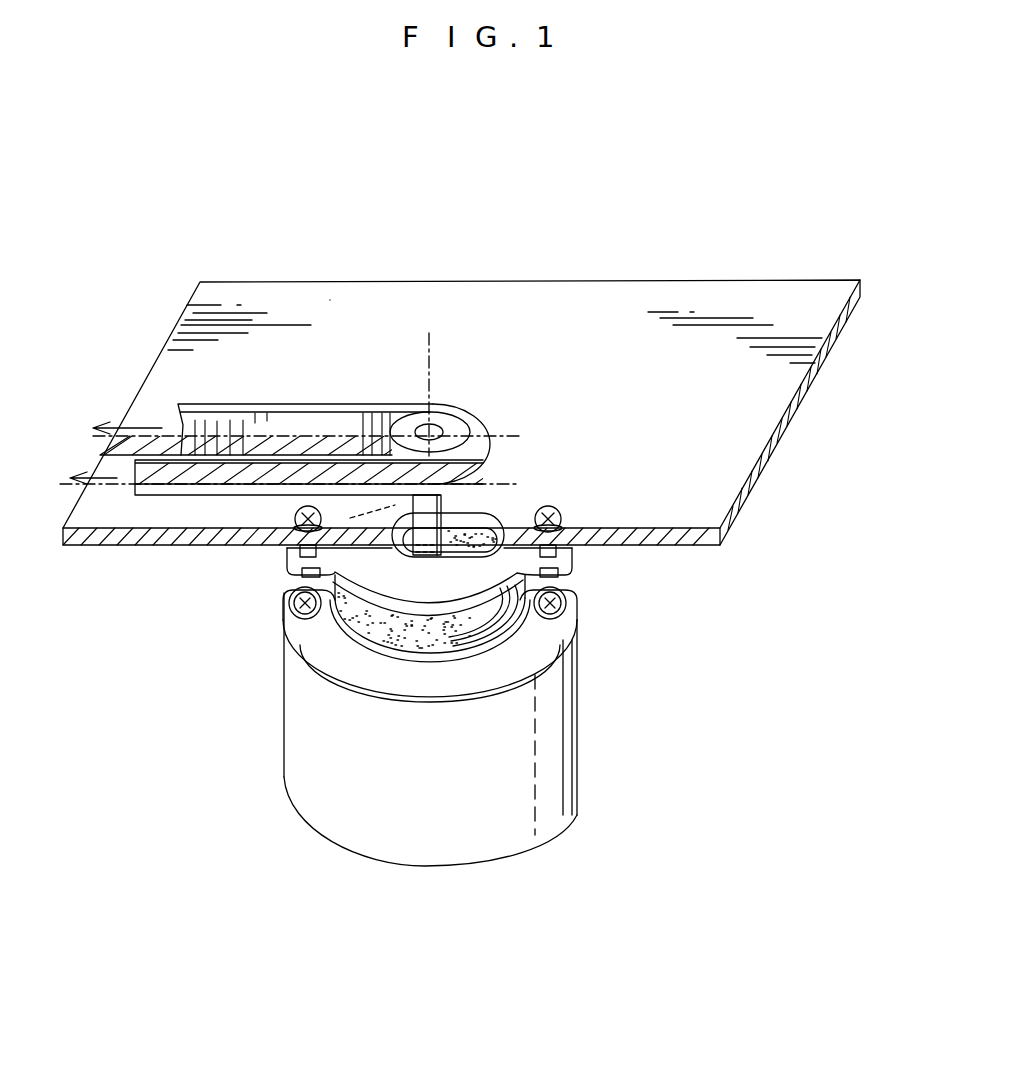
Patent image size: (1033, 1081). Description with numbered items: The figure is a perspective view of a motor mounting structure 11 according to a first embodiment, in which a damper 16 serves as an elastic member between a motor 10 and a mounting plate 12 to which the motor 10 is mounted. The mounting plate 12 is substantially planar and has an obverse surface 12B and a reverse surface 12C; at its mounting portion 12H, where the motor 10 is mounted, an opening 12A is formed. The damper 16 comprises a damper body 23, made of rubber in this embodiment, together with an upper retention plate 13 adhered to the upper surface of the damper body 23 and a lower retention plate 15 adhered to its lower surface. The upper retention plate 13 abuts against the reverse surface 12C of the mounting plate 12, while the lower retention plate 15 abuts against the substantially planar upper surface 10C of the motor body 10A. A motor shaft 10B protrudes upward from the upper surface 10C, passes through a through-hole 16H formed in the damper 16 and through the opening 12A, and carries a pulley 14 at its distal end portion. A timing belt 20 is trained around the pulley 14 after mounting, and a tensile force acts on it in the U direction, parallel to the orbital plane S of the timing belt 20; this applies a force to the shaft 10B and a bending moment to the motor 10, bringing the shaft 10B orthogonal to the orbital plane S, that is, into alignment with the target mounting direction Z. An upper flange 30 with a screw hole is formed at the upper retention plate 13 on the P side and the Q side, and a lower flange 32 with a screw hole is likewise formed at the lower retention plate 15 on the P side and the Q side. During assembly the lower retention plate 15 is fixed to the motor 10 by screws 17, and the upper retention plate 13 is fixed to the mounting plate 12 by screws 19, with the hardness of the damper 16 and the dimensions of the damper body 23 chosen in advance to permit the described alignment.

The motor 10 is at (473, 711).
The motor body 10A is at (508, 832).
The motor shaft 10B is at (290, 505).
The upper surface of motor body 10C is at (407, 680).
The motor mounting structure 11 is at (840, 137).
The mounting plate 12 is at (797, 413).
The opening 12A is at (472, 518).
The obverse surface 12B is at (700, 500).
The reverse surface 12C is at (693, 547).
The mounting portion 12H is at (508, 512).
The upper retention plate 13 is at (530, 513).
The pulley 14 is at (420, 410).
The lower retention plate 15 is at (500, 648).
The damper 16 is at (337, 683).
The through-hole 16H is at (476, 552).
The screws 17 is at (287, 602).
The screws 19 is at (246, 548).
The timing belt 20 is at (157, 494).
The damper body 23 is at (365, 626).
The upper flange 30 is at (273, 558).
The lower flange 32 is at (293, 623).
The P side P is at (293, 585).
The Q side Q is at (562, 587).
The orbital plane S is at (492, 442).
The U direction U is at (96, 454).
The target mounting direction Z is at (430, 340).